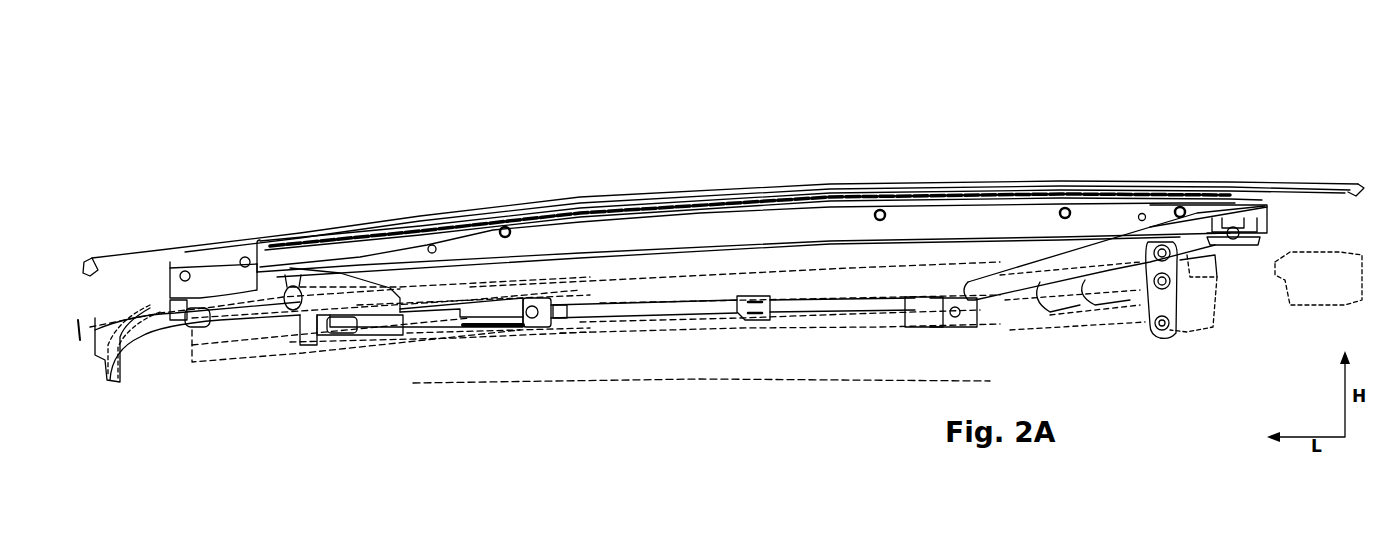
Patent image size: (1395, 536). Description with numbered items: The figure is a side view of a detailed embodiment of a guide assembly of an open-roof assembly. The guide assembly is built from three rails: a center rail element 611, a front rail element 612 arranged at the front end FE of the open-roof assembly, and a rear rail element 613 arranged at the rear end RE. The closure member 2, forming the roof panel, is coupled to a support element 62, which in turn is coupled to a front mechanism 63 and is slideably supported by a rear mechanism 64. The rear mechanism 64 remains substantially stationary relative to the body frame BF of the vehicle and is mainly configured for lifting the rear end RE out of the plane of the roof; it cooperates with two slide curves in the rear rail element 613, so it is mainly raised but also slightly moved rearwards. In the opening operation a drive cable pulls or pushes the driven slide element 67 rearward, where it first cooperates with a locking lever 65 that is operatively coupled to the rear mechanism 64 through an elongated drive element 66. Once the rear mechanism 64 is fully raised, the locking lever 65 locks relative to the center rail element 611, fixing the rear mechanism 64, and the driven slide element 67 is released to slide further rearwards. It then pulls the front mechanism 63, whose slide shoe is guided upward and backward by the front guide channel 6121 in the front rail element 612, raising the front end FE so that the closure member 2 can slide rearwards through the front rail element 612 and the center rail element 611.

The closure member 2 is at (498, 205).
The support element 62 is at (371, 258).
The front mechanism 63 is at (268, 364).
The rear mechanism 64 is at (1132, 304).
The locking lever 65 is at (465, 358).
The elongated drive element 66 is at (743, 312).
The driven slide element 67 is at (297, 320).
The center rail element 611 is at (687, 322).
The front rail element 612 is at (166, 374).
The front guide channel 6121 is at (133, 340).
The rear rail element 613 is at (1193, 313).
The front end FE is at (93, 250).
The rear end RE is at (1340, 166).
The body frame BF is at (653, 381).